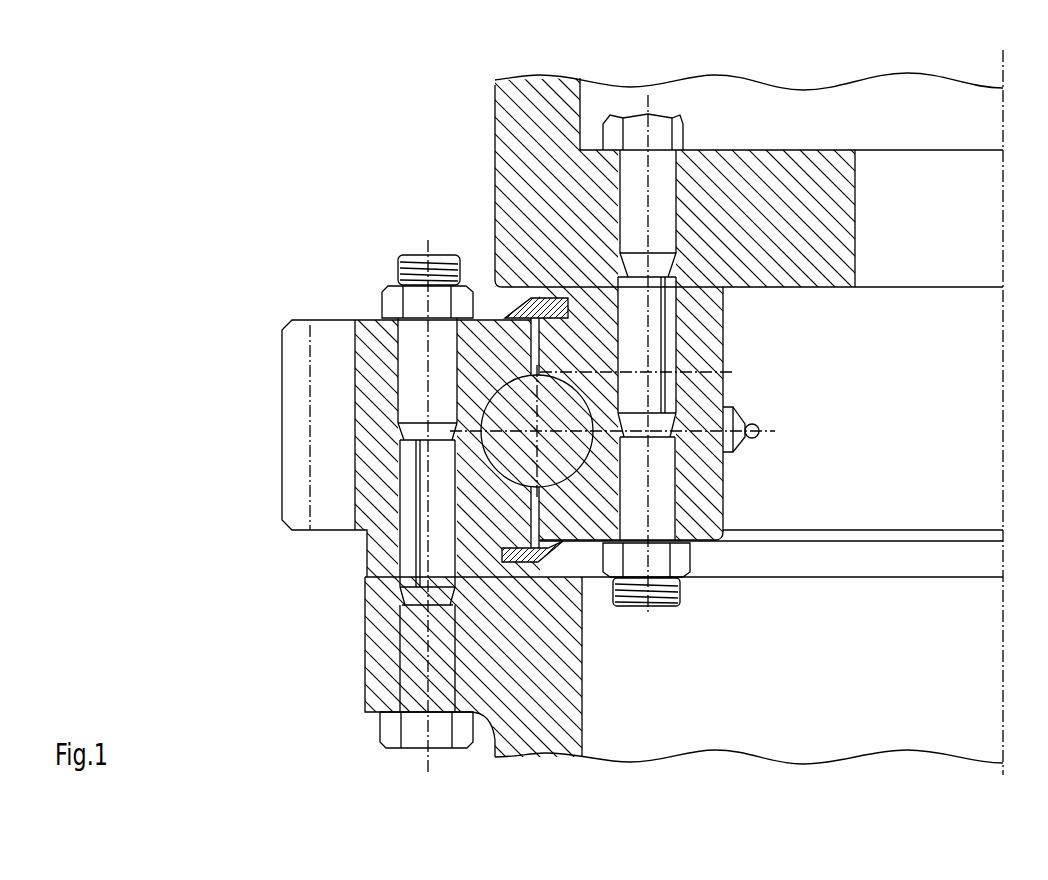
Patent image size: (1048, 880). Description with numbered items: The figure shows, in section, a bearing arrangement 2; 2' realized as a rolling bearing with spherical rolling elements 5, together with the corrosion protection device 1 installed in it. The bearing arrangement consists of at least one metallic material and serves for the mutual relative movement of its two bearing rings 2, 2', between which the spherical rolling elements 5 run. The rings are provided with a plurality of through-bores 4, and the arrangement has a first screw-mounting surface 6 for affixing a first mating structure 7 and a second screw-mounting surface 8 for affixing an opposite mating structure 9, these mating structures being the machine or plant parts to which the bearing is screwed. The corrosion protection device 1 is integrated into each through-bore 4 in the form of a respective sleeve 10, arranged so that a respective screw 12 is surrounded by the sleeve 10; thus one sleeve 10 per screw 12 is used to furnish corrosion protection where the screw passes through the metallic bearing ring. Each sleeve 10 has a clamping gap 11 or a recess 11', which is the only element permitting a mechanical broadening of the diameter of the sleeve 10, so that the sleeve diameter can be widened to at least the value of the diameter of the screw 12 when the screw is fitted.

The corrosion protection device 1 is at (250, 128).
The bearing ring 2 is at (524, 440).
The bearing ring 2' is at (524, 440).
The through-bore 4 is at (400, 468).
The spherical rolling element 5 is at (517, 457).
The first screw-mounting surface 6 is at (372, 585).
The first mating structure 7 is at (522, 745).
The second screw-mounting surface 8 is at (723, 312).
The opposite mating structure 9 is at (510, 170).
The sleeve 10 is at (648, 345).
The clamping gap 11 is at (729, 345).
The recess 11' is at (606, 481).
The screw 12 is at (650, 197).